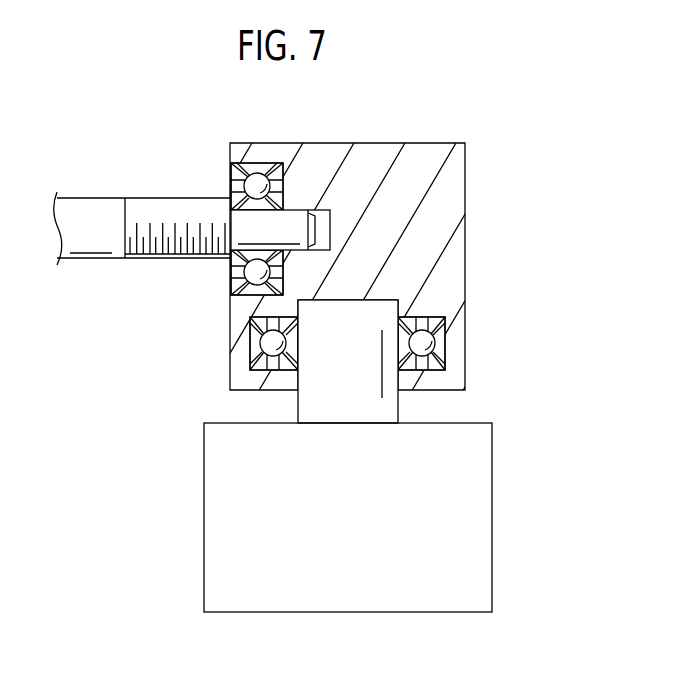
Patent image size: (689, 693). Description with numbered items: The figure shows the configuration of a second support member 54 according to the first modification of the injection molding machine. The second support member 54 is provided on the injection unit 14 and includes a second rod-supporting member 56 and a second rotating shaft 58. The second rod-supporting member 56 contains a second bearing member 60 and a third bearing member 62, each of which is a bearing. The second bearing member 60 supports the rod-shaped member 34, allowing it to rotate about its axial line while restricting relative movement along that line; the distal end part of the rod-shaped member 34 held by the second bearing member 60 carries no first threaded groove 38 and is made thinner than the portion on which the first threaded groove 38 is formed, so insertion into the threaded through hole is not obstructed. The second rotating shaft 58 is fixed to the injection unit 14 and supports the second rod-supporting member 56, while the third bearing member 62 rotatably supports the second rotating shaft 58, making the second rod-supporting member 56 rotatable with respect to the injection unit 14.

The injection unit 14 is at (472, 505).
The rod-shaped member 34 is at (137, 230).
The first threaded groove 38 is at (156, 258).
The second support member 54 is at (357, 258).
The second rod-supporting member 56 is at (425, 150).
The second rotating shaft 58 is at (350, 318).
The second bearing member 60 is at (231, 178).
The third bearing member 62 is at (433, 331).